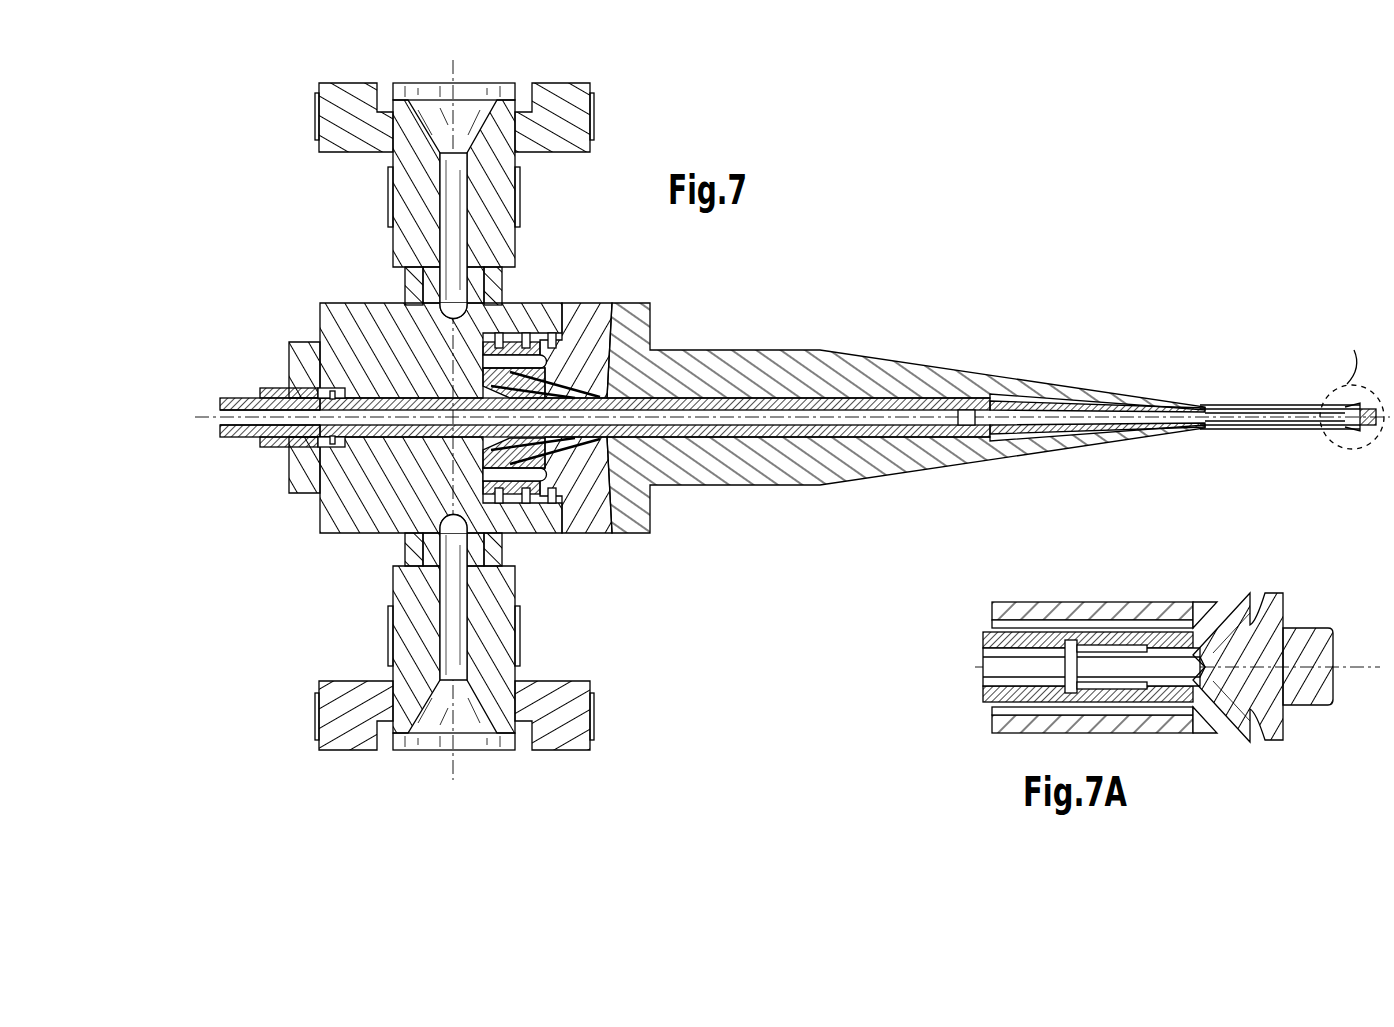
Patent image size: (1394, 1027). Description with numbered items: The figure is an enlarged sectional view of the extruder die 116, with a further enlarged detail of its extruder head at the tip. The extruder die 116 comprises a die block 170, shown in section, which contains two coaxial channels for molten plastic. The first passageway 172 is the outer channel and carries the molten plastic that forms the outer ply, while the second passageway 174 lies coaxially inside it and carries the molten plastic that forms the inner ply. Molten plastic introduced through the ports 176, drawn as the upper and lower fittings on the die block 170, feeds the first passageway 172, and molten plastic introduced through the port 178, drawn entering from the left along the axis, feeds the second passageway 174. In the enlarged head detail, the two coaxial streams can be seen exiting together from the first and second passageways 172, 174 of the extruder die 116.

In FIG. 7, the extruder die 116 is at (955, 295).
In FIG. 7A, the extruder die 116 is at (1152, 588).
In FIG. 7, the die block 170 is at (733, 341).
In FIG. 7, the first passageway 172 is at (836, 393).
In FIG. 7A, the first passageway 172 is at (1218, 731).
In FIG. 7, the second passageway 174 is at (767, 424).
In FIG. 7A, the second passageway 174 is at (1256, 610).
In FIG. 7, the ports 176 is at (493, 90).
In FIG. 7, the port 178 is at (217, 424).